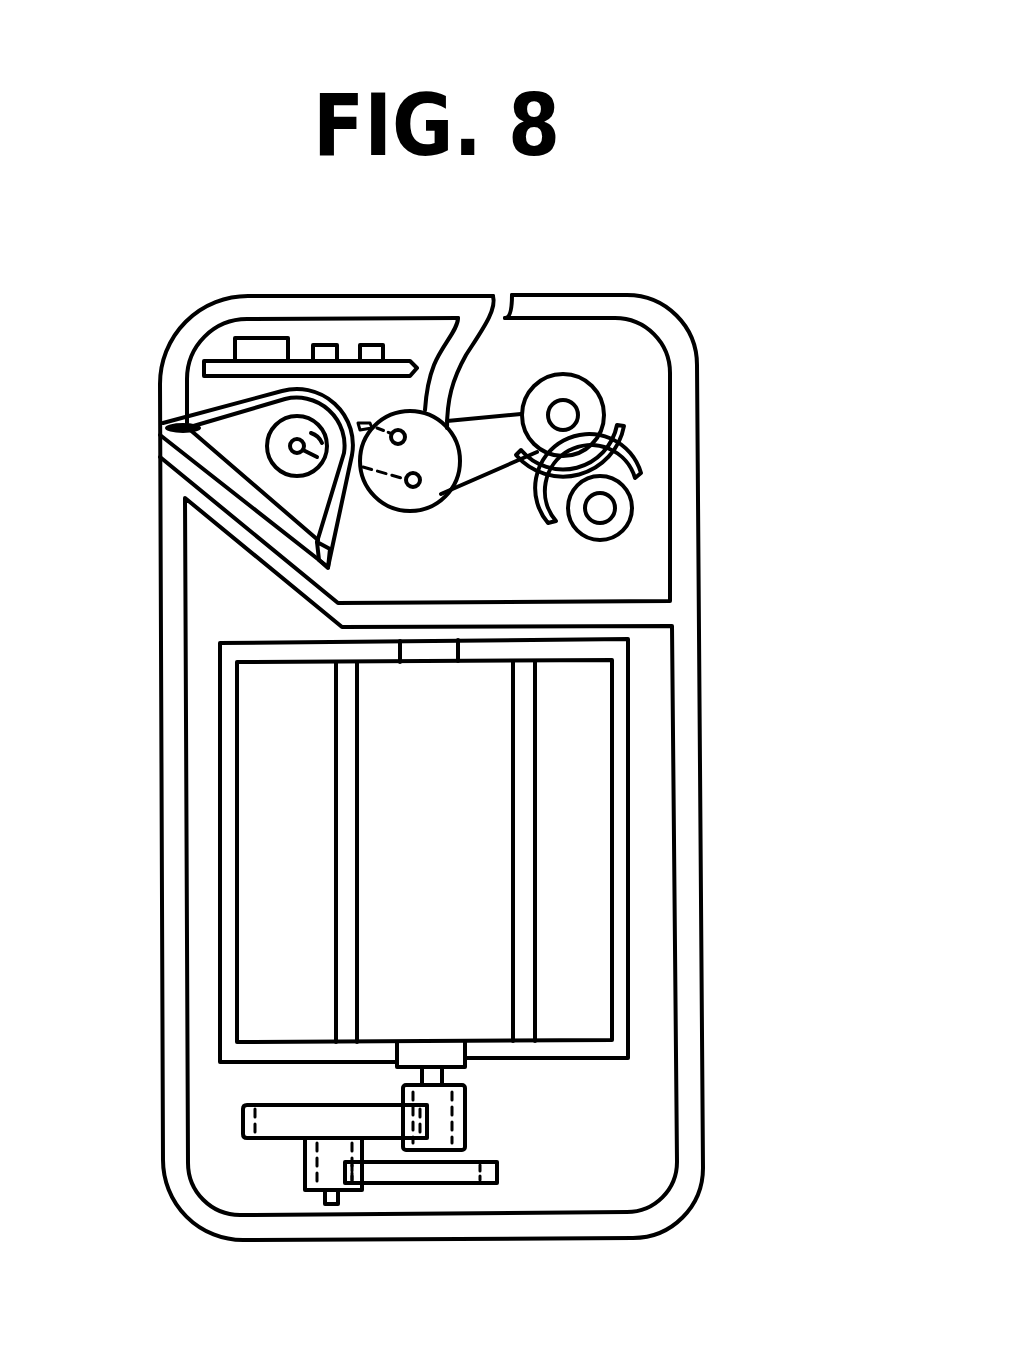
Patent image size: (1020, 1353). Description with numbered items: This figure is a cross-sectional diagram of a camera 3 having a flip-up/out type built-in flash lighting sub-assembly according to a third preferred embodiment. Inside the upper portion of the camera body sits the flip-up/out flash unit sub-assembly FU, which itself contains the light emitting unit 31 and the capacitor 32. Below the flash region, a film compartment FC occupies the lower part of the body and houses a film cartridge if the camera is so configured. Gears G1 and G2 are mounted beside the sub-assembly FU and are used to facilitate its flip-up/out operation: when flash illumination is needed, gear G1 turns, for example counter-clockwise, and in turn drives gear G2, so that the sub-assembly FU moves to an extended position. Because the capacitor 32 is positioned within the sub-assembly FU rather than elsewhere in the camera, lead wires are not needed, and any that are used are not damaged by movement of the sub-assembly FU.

The camera 3 is at (764, 58).
The flip-up/out flash unit sub-assembly FU is at (292, 297).
The light emitting unit 31 is at (267, 447).
The capacitor 32 is at (444, 436).
The gear G2 is at (625, 424).
The gear G1 is at (614, 537).
The film compartment FC is at (650, 748).